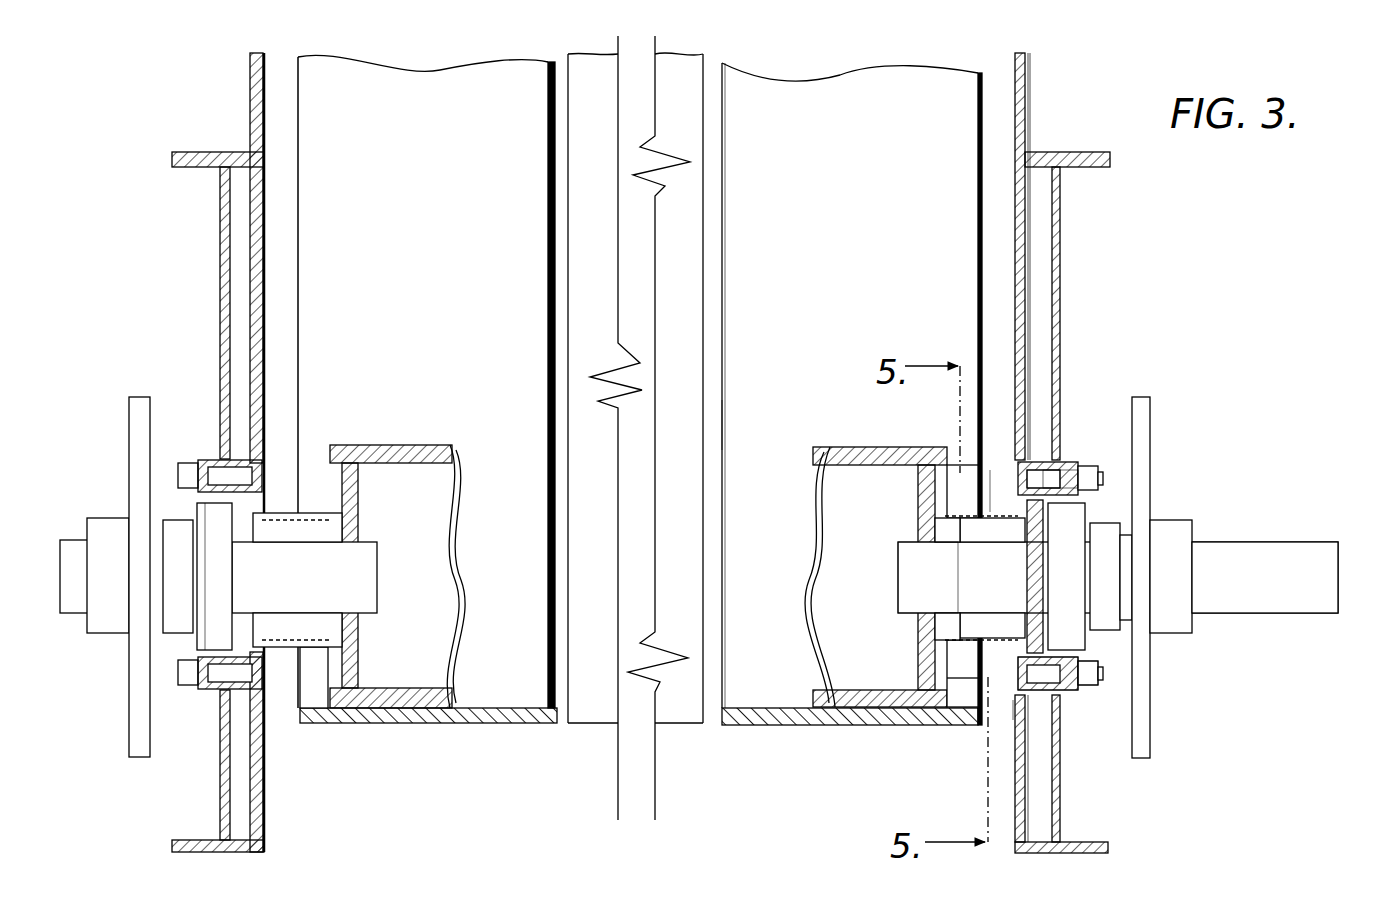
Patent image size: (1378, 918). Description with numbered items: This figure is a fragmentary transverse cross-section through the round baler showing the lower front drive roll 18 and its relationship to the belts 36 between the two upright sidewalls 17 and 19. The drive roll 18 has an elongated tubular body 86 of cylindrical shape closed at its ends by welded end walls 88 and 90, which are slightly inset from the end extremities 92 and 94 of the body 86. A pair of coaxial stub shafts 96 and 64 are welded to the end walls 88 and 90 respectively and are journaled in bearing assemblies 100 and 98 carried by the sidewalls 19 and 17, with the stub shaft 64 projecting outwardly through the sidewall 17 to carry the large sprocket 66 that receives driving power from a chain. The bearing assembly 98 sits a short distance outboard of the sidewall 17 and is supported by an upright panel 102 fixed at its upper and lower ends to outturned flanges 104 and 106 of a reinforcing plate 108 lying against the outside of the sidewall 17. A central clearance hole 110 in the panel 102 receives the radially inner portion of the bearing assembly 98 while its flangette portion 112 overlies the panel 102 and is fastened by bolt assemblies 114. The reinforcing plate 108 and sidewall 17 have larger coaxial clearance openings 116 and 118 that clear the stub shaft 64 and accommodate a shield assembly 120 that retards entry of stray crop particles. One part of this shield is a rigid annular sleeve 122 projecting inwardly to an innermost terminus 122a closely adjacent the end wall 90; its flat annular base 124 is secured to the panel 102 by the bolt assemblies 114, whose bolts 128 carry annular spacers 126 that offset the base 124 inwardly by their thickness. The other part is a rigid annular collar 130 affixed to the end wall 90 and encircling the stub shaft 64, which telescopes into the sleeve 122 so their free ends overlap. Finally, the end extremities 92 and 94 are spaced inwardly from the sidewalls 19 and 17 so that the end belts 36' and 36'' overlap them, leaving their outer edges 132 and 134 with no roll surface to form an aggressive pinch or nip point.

The sidewall 17 is at (1025, 62).
The lower drive roll 18 is at (740, 440).
The sidewall 19 is at (258, 100).
The belts 36 is at (668, 410).
The first end belt 36' is at (427, 366).
The last end belt 36'' is at (852, 368).
The stub shaft 64 is at (1298, 550).
The sprocket 66 is at (1143, 745).
The tubular body 86 is at (500, 452).
The end wall 88 is at (355, 520).
The end wall 90 is at (925, 668).
The end extremity 92 is at (330, 448).
The end extremity 94 is at (960, 432).
The stub shaft 96 is at (76, 605).
The bearing assembly 98 is at (1093, 516).
The bearing assembly 100 is at (185, 515).
The upright panel 102 is at (1060, 218).
The outturned flange 104 is at (1072, 152).
The outturned flange 106 is at (1105, 848).
The reinforcing plate 108 is at (1027, 248).
The clearance hole 110 is at (1060, 506).
The flangette portion 112 is at (1066, 462).
The bolt assemblies 114 is at (1105, 470).
The clearance opening 116 is at (1057, 760).
The clearance opening 118 is at (1013, 708).
The shield assembly 120 is at (996, 508).
The annular sleeve 122 is at (1000, 636).
The innermost terminus 122a is at (918, 517).
The annular base 124 is at (1048, 462).
The annular spacers 126 is at (1048, 700).
The bolts 128 is at (1100, 682).
The annular collar 130 is at (938, 618).
The outer edge 132 is at (298, 300).
The outer edge 134 is at (979, 240).